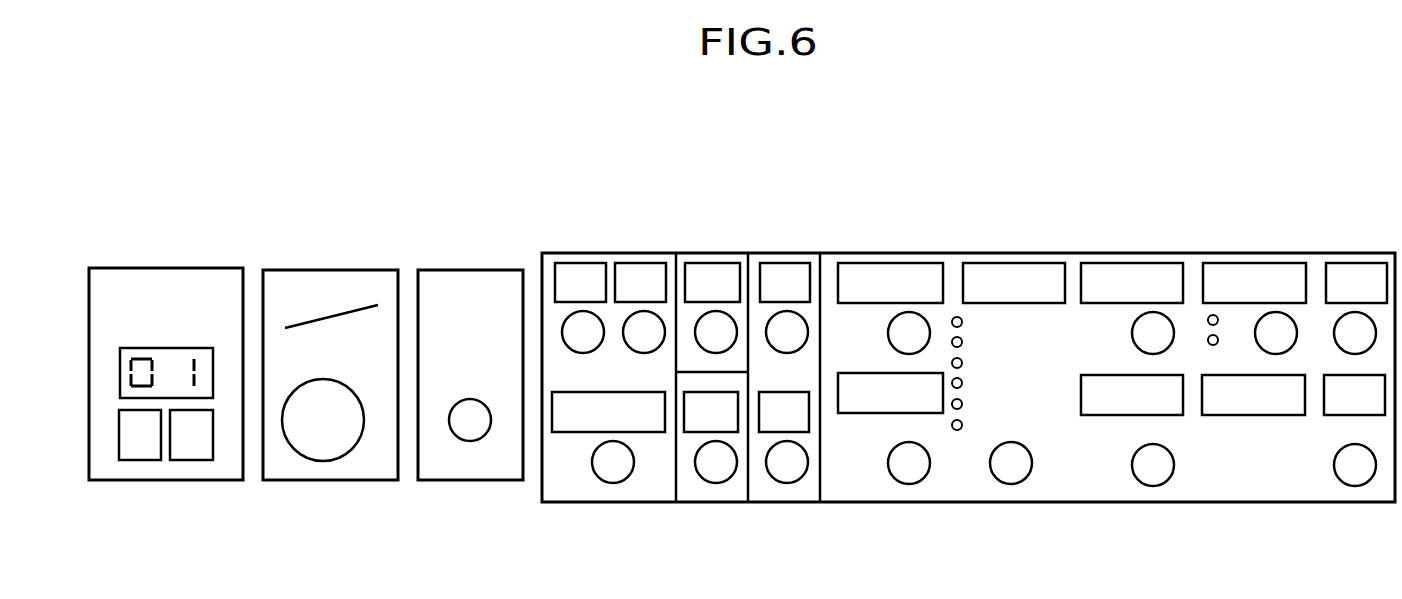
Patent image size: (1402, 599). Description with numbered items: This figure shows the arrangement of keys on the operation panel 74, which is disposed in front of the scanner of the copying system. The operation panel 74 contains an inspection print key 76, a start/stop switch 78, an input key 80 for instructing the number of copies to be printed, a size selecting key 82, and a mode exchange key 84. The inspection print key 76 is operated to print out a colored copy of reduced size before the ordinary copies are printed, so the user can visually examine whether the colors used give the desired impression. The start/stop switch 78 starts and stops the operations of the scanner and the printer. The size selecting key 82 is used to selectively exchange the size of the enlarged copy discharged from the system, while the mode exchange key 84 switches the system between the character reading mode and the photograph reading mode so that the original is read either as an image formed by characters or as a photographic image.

The operation panel 74 is at (572, 227).
The inspection print key 76 is at (470, 467).
The start/stop switch 78 is at (322, 468).
The input key 80 is at (163, 470).
The size selecting key 82 is at (1010, 484).
The mode exchange key 84 is at (1297, 328).